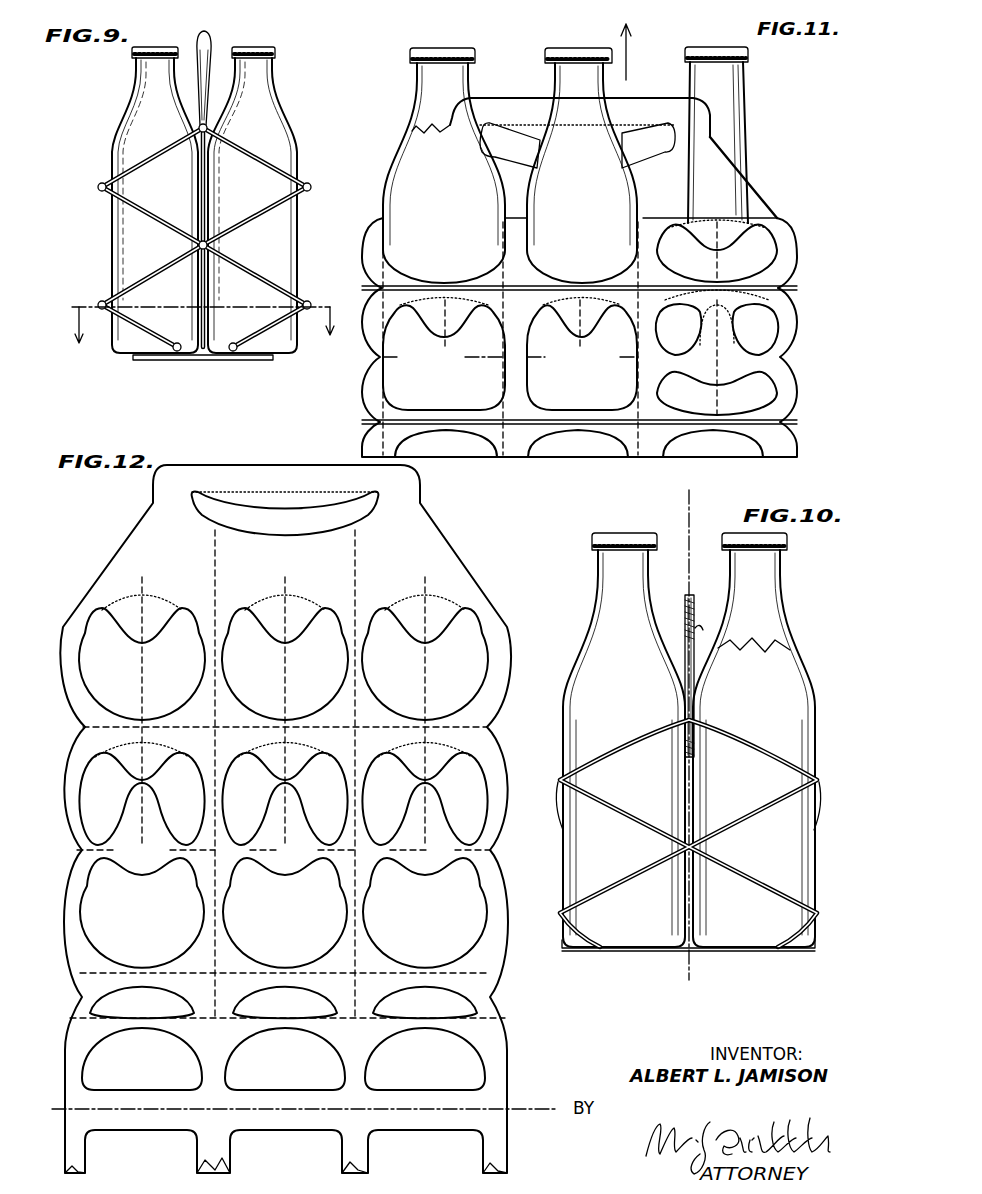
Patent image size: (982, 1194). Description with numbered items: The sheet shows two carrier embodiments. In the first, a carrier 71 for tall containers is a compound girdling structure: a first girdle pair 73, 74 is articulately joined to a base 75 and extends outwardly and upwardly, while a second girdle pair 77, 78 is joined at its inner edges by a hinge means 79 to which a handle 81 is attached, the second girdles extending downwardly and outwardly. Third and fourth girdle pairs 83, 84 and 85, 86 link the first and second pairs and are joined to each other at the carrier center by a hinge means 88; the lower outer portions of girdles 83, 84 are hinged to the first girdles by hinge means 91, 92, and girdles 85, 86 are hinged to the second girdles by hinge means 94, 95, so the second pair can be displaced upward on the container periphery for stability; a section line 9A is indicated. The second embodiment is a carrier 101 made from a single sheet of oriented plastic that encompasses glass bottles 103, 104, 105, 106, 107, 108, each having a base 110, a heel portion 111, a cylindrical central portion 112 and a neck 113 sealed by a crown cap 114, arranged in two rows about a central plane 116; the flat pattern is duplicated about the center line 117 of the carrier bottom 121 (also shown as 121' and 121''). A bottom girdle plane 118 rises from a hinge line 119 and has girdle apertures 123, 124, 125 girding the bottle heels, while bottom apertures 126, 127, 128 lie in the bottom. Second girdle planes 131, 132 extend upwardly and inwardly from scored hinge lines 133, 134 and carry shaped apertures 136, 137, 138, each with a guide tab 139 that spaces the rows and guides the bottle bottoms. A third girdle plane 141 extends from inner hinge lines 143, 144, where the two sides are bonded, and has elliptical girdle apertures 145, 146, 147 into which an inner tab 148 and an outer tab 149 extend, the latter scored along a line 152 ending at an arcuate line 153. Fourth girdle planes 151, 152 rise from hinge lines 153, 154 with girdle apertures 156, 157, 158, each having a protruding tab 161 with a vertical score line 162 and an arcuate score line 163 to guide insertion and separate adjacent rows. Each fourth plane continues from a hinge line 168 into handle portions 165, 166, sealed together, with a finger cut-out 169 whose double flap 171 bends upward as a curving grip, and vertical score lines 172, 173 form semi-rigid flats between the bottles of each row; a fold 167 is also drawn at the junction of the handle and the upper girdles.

In FIG. 9, the container carrier 71 is at (120, 103).
In FIG. 9, the first girdle 73 is at (275, 350).
In FIG. 9, the first girdle 74 is at (140, 330).
In FIG. 9, the base 75 is at (250, 362).
In FIG. 9, the second girdle 77 is at (250, 150).
In FIG. 9, the second girdle 78 is at (140, 160).
In FIG. 9, the hinge means 79 is at (207, 160).
In FIG. 9, the handle 81 is at (209, 36).
In FIG. 9, the third girdle 83 is at (270, 275).
In FIG. 9, the third girdle 84 is at (140, 275).
In FIG. 9, the fourth girdle 85 is at (268, 210).
In FIG. 9, the fourth girdle 86 is at (140, 212).
In FIG. 9, the hinge means 88 is at (205, 270).
In FIG. 9, the hinge means 91 is at (308, 303).
In FIG. 9, the hinge means 92 is at (100, 310).
In FIG. 9, the hinge means 94 is at (307, 185).
In FIG. 9, the hinge means 95 is at (98, 186).
In FIG. 9, the section line 9A is at (192, 342).
In FIG. 11, the carrier 101 is at (652, 72).
In FIG. 10, the carrier 101 is at (808, 648).
In FIG. 11, the glass bottle 103 is at (413, 200).
In FIG. 11, the glass bottle 104 is at (425, 110).
In FIG. 11, the glass bottle 105 is at (581, 199).
In FIG. 10, the glass bottle 106 is at (780, 590).
In FIG. 10, the glass bottle 107 is at (605, 640).
In FIG. 11, the glass bottle 108 is at (735, 138).
In FIG. 10, the glass bottle 108 is at (793, 688).
In FIG. 10, the bottle base 110 is at (665, 952).
In FIG. 10, the heel portion 111 is at (565, 948).
In FIG. 10, the central portion 112 is at (582, 855).
In FIG. 11, the neck 113 is at (430, 78).
In FIG. 10, the neck 113 is at (600, 580).
In FIG. 10, the crown cap 114 is at (615, 533).
In FIG. 10, the central plane 116 is at (688, 525).
In FIG. 12, the center line 117 is at (525, 1112).
In FIG. 12, the bottom girdle plane 118 is at (308, 998).
In FIG. 10, the bottom girdle plane 118 is at (585, 951).
In FIG. 12, the hinge line 119 is at (493, 1018).
In FIG. 10, the hinge line 119 is at (600, 952).
In FIG. 11, the carrier bottom 121 is at (709, 455).
In FIG. 12, the carrier bottom 121 is at (517, 1054).
In FIG. 10, the carrier bottom 121 is at (744, 976).
In FIG. 11, the carrier bottom 121' is at (572, 455).
In FIG. 11, the carrier bottom 121'' is at (446, 455).
In FIG. 11, the girdle aperture 123 is at (745, 448).
In FIG. 11, the girdle aperture 124 is at (590, 440).
In FIG. 11, the girdle aperture 125 is at (462, 440).
In FIG. 12, the bottom aperture 126 is at (466, 1045).
In FIG. 12, the bottom aperture 127 is at (318, 1045).
In FIG. 12, the bottom aperture 128 is at (175, 1045).
In FIG. 12, the second girdle plane 131 is at (497, 925).
In FIG. 10, the second girdle plane 131 is at (752, 880).
In FIG. 10, the second girdle plane 132 is at (640, 885).
In FIG. 11, the hinge line 133 is at (760, 418).
In FIG. 12, the hinge line 133 is at (308, 973).
In FIG. 10, the hinge line 133 is at (834, 893).
In FIG. 10, the hinge line 134 is at (560, 915).
In FIG. 11, the shaped aperture 136 is at (685, 410).
In FIG. 12, the shaped aperture 136 is at (425, 913).
In FIG. 12, the shaped aperture 137 is at (232, 928).
In FIG. 12, the shaped aperture 138 is at (88, 928).
In FIG. 12, the guide tab 139 is at (150, 868).
In FIG. 10, the guide tab 139 is at (700, 870).
In FIG. 12, the third girdle plane 141 is at (505, 777).
In FIG. 10, the third girdle plane 141 is at (612, 810).
In FIG. 11, the inner hinge line 143 is at (760, 350).
In FIG. 12, the inner hinge line 143 is at (480, 852).
In FIG. 10, the inner hinge line 143 is at (697, 848).
In FIG. 10, the inner hinge line 144 is at (683, 848).
In FIG. 12, the girdle aperture 145 is at (488, 727).
In FIG. 12, the girdle aperture 146 is at (229, 770).
In FIG. 12, the girdle aperture 147 is at (92, 770).
In FIG. 11, the inner tab 148 is at (740, 340).
In FIG. 12, the inner tab 148 is at (155, 812).
In FIG. 10, the inner tab 148 is at (696, 808).
In FIG. 11, the outer tab 149 is at (455, 322).
In FIG. 12, the outer tab 149 is at (295, 768).
In FIG. 10, the outer tab 149 is at (560, 845).
In FIG. 10, the fourth girdle plane 151 is at (760, 750).
In FIG. 10, the fourth girdle plane 152 is at (635, 748).
In FIG. 10, the hinge line 153 is at (820, 793).
In FIG. 11, the hinge line 154 is at (755, 285).
In FIG. 12, the hinge line 154 is at (493, 705).
In FIG. 10, the hinge line 154 is at (560, 782).
In FIG. 12, the girdle aperture 156 is at (365, 665).
In FIG. 11, the girdle aperture 157 is at (548, 282).
In FIG. 12, the girdle aperture 157 is at (238, 712).
In FIG. 11, the girdle aperture 158 is at (410, 282).
In FIG. 12, the girdle aperture 158 is at (96, 712).
In FIG. 11, the protruding tab 161 is at (705, 240).
In FIG. 12, the protruding tab 161 is at (150, 628).
In FIG. 10, the protruding tab 161 is at (683, 760).
In FIG. 12, the vertical score line 162 is at (130, 618).
In FIG. 12, the arcuate score line 163 is at (160, 595).
In FIG. 12, the handle portion 165 is at (167, 492).
In FIG. 10, the handle portion 165 is at (705, 655).
In FIG. 10, the handle portion 166 is at (683, 615).
In FIG. 10, the fold 167 is at (695, 725).
In FIG. 11, the hinge line 168 is at (648, 218).
In FIG. 12, the finger cut-out 169 is at (290, 512).
In FIG. 10, the double flap 171 is at (698, 628).
In FIG. 12, the vertical score line 172 is at (215, 585).
In FIG. 12, the vertical score line 173 is at (360, 585).